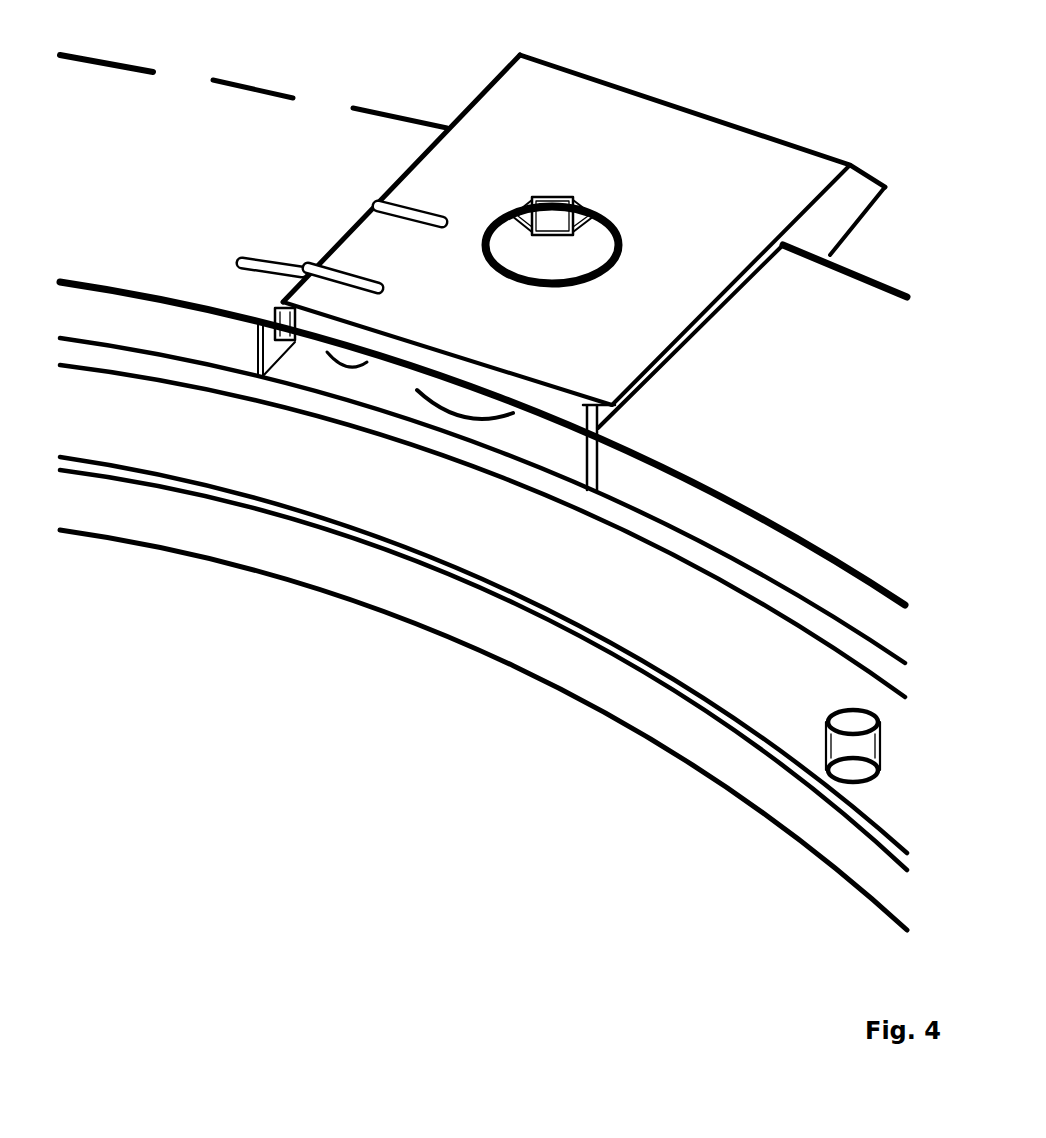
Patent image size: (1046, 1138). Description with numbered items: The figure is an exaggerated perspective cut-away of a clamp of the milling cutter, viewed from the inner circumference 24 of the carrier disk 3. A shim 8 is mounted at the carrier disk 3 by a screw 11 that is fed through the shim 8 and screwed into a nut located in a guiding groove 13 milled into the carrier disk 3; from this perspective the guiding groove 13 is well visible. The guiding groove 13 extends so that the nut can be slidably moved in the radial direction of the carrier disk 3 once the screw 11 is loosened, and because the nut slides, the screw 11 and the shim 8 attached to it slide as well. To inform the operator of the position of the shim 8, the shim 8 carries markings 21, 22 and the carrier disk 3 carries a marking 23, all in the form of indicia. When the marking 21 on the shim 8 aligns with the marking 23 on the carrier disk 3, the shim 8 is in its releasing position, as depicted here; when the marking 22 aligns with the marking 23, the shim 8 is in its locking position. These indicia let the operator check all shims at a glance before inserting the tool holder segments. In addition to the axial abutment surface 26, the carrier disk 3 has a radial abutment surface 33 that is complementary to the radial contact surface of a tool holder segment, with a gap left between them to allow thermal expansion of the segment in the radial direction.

The carrier disk 3 is at (845, 313).
The shim 8 is at (778, 203).
The screw 11 is at (602, 247).
The guiding groove 13 is at (448, 410).
The marking 21 is at (338, 282).
The marking 22 is at (415, 218).
The marking 23 is at (253, 258).
The inner circumference 24 is at (617, 678).
The axial abutment surface 26 is at (778, 672).
The radial abutment surface 33 is at (142, 332).